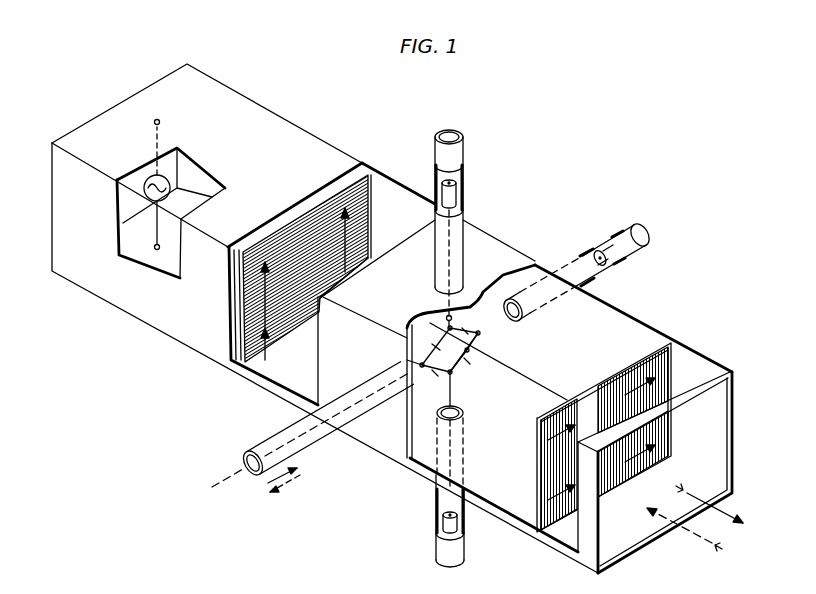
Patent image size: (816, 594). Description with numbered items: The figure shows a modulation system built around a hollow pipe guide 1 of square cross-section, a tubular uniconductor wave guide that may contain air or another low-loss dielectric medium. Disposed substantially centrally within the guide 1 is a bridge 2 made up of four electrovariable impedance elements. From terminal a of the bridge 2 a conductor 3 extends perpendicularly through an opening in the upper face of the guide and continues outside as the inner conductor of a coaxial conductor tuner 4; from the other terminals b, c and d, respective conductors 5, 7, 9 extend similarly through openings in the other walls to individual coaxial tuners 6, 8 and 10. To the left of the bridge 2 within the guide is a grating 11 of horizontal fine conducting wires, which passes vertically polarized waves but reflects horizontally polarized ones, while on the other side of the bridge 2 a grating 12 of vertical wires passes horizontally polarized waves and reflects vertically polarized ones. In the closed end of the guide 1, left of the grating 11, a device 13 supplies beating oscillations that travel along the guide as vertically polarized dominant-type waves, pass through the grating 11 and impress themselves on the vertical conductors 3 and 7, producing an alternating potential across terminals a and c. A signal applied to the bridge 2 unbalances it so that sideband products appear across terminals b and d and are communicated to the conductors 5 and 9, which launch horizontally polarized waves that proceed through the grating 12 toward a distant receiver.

The hollow pipe guide 1 is at (496, 247).
The bridge 2 is at (452, 356).
The conductor 3 is at (451, 316).
The coaxial conductor tuner 4 is at (456, 221).
The conductor 5 is at (407, 360).
The coaxial tuner 6 is at (350, 392).
The conductor 7 is at (453, 400).
The coaxial tuner 8 is at (462, 541).
The conductor 9 is at (499, 321).
The coaxial tuner 10 is at (563, 268).
The grating 11 is at (360, 218).
The grating 12 is at (660, 360).
The device for supplying beating oscillations 13 is at (168, 197).